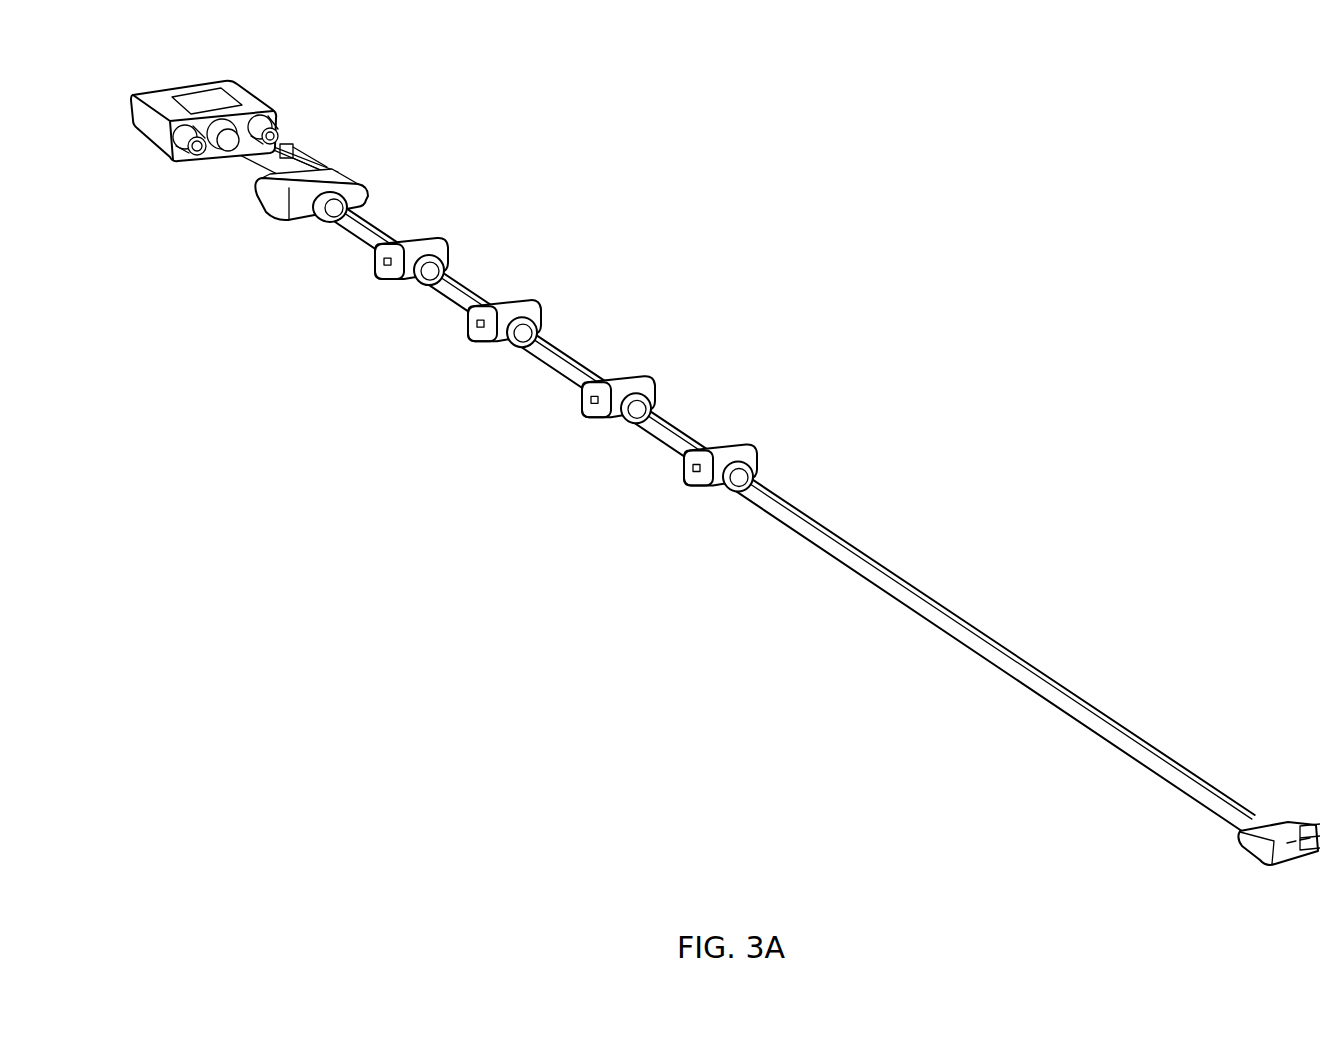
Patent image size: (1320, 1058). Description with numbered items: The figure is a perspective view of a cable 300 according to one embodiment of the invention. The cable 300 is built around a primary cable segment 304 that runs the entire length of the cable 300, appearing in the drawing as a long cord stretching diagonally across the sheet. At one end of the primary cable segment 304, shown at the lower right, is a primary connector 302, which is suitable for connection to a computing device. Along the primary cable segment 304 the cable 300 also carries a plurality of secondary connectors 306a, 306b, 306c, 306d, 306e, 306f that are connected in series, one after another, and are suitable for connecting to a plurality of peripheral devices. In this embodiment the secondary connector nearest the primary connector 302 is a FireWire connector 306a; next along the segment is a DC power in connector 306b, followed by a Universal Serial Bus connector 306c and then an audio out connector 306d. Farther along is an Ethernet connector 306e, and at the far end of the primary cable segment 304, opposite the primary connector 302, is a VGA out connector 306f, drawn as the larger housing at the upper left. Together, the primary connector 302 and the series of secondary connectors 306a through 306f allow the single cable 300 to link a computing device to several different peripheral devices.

The cable 300 is at (1118, 215).
The primary connector 302 is at (1246, 843).
The primary cable segment 304 is at (1107, 718).
The FireWire (IEEE 1394) connector 306a is at (727, 448).
The DC power in connector 306b is at (627, 383).
The Universal Serial Bus (USB) connector 306c is at (530, 307).
The audio out connector 306d is at (438, 249).
The Ethernet connector 306e is at (350, 180).
The VGA out connector 306f is at (236, 92).